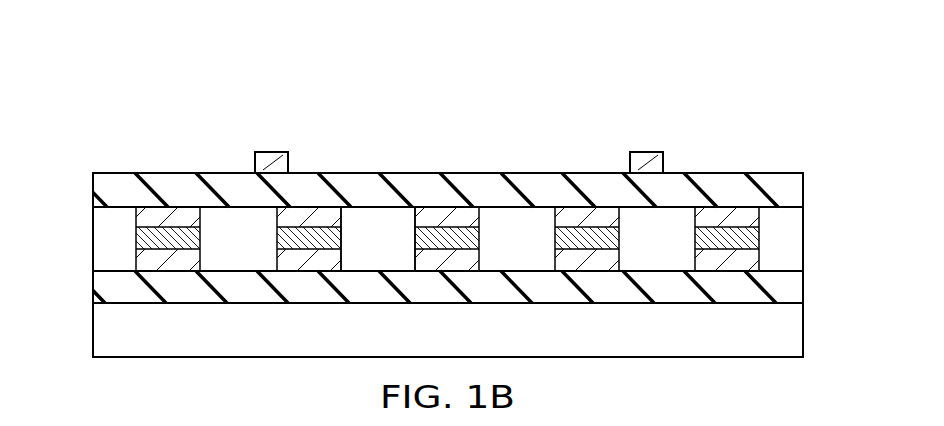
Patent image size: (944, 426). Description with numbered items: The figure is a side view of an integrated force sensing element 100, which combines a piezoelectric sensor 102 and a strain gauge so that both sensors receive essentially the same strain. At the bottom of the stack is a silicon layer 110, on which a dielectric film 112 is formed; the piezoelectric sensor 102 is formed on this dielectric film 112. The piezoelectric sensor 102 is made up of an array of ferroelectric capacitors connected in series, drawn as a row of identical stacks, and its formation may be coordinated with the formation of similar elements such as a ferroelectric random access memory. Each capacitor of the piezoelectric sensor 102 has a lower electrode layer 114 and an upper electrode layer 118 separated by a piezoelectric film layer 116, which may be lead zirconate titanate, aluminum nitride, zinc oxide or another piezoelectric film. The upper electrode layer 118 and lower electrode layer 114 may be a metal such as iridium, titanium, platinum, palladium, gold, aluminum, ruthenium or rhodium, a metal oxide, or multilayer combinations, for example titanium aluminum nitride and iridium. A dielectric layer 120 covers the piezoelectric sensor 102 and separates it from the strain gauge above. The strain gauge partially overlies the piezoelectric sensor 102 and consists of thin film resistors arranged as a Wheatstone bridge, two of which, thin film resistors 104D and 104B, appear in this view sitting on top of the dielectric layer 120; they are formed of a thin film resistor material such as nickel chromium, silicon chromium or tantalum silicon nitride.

The integrated force sensing element 100 is at (738, 140).
The piezoelectric sensor 102 is at (86, 208).
The thin film resistor 104D is at (270, 158).
The thin film resistor 104B is at (648, 160).
The silicon layer 110 is at (793, 331).
The dielectric film 112 is at (793, 289).
The lower electrode layer 114 is at (352, 255).
The piezoelectric film layer 116 is at (477, 237).
The upper electrode layer 118 is at (615, 217).
The dielectric layer 120 is at (793, 187).